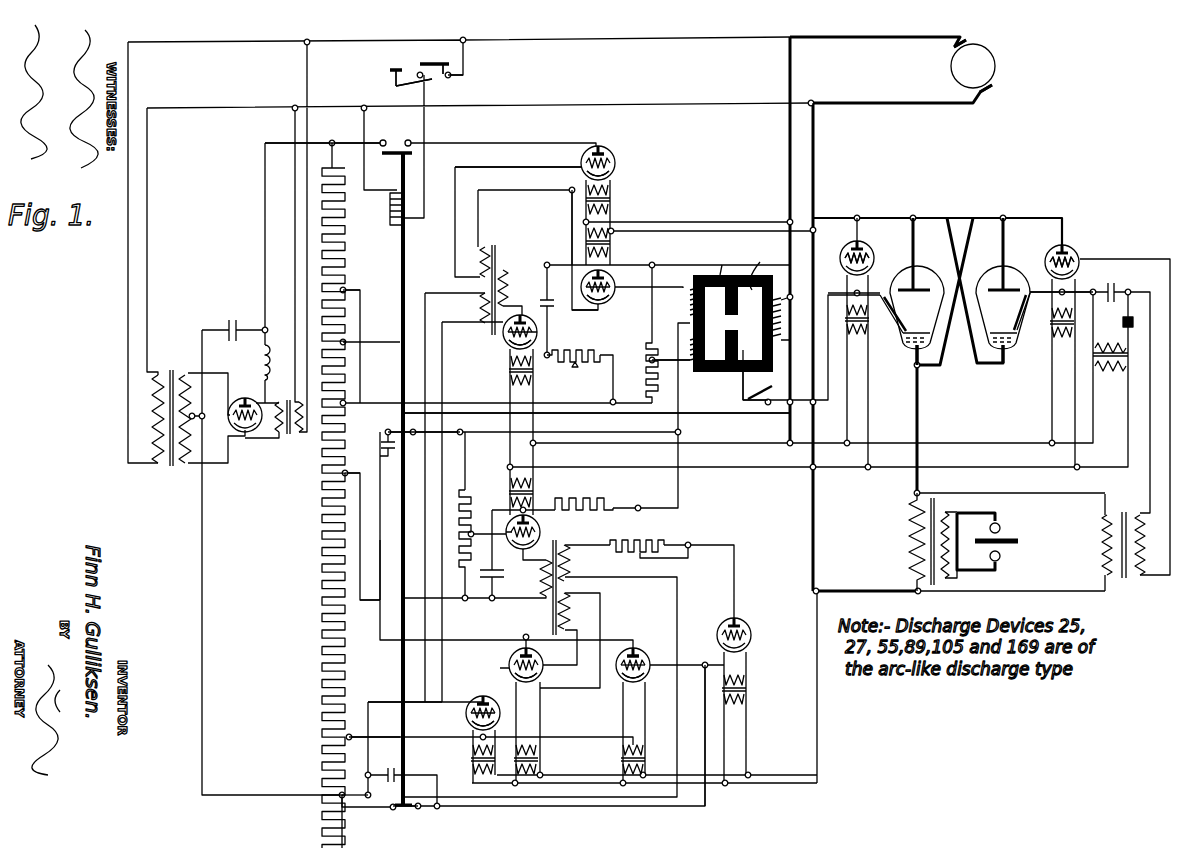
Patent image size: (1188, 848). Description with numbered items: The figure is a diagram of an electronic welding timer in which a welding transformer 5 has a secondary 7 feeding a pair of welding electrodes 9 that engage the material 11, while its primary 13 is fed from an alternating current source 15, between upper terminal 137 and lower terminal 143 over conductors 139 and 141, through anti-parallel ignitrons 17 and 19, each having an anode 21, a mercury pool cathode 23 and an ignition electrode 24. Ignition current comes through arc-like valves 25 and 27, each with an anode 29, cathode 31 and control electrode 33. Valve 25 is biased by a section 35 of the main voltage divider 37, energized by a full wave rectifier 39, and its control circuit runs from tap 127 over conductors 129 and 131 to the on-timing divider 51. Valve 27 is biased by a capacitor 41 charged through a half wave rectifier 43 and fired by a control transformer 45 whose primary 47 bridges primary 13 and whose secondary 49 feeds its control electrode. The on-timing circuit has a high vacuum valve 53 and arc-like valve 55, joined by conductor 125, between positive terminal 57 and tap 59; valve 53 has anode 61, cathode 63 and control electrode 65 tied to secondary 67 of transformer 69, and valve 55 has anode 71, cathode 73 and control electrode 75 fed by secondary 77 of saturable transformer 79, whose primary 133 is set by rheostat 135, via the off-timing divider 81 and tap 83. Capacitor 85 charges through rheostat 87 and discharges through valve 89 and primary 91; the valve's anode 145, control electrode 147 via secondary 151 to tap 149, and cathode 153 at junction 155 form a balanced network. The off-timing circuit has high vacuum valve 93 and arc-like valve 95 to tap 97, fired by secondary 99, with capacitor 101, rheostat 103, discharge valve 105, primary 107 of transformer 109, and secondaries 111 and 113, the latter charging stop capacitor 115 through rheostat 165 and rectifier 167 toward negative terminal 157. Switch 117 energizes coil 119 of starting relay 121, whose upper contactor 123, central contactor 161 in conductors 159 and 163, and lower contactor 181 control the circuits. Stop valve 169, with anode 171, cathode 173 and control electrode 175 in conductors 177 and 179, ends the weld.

The welding transformer 5 is at (953, 589).
The secondary 7 is at (946, 516).
The welding electrodes 9 is at (1002, 556).
The material 11 is at (982, 539).
The primary 13 is at (906, 542).
The source of alternating current 15 is at (933, 82).
The ignitron 17 is at (908, 283).
The ignitron 19 is at (996, 282).
The anode 21 is at (990, 289).
The mercury pool cathode 23 is at (1006, 352).
The ignition electrode 24 is at (1013, 340).
The auxiliary electric discharge valve 25 is at (850, 246).
The auxiliary electric discharge valve 27 is at (1071, 248).
The anode 29 is at (1058, 244).
The cathode 31 is at (1076, 290).
The control electrode 33 is at (1046, 264).
The section 35 is at (366, 342).
The voltage divider 37 is at (317, 609).
The full wave rectifier 39 is at (246, 369).
The capacitor 41 is at (1117, 288).
The half wave rectifier 43 is at (1123, 322).
The control transformer 45 is at (1137, 499).
The primary 47 is at (1100, 555).
The secondary 49 is at (1140, 578).
The auxiliary voltage divider 51 is at (647, 350).
The auxiliary valve 53 is at (616, 162).
The auxiliary valve 55 is at (614, 287).
The positive terminal 57 is at (335, 137).
The intermediate tap 59 is at (386, 432).
The anode 61 is at (512, 656).
The cathode 63 is at (543, 676).
The control electrode 65 is at (510, 667).
The secondary 67 is at (484, 248).
The transformer 69 is at (495, 262).
The anode 71 is at (476, 714).
The cathode 73 is at (470, 722).
The control electrode 75 is at (466, 714).
The secondary winding 77 is at (690, 292).
The impulse transformer 79 is at (733, 323).
The auxiliary voltage divider 81 is at (470, 513).
The intermediate tap 83 is at (346, 474).
The capacitor 85 is at (541, 301).
The rheostat 87 is at (584, 348).
The auxiliary valve 89 is at (506, 346).
The primary 91 is at (508, 277).
The high vacuum valve 93 is at (543, 664).
The arc-like valve 95 is at (480, 701).
The intermediate tap 97 is at (346, 737).
The secondary section 99 is at (480, 308).
The capacitor 101 is at (494, 572).
The rheostat 103 is at (585, 505).
The auxiliary valve 105 is at (541, 530).
The primary 107 is at (540, 582).
The transformer 109 is at (560, 548).
The secondary section 111 is at (570, 611).
The secondary section 113 is at (571, 562).
The stop capacitor 115 is at (390, 768).
The circuit controller 117 is at (488, 90).
The exciting coil 119 is at (390, 206).
The starting relay 121 is at (387, 180).
The upper contactor 123 is at (392, 137).
The conductor 125 is at (572, 215).
The intermediate tap 127 is at (345, 289).
The conductor 129 is at (730, 413).
The conductor 131 is at (732, 261).
The primary 133 is at (765, 269).
The rheostat 135 is at (766, 387).
The upper terminal 137 is at (968, 44).
The conductor 139 is at (791, 70).
The conductor 141 is at (815, 146).
The lower terminal 143 is at (973, 100).
The anode 145 is at (545, 531).
The control electrode 147 is at (506, 340).
The intermediate tap 149 is at (649, 362).
The secondary section 151 is at (742, 371).
The cathode 153 is at (532, 492).
The junction point 155 is at (575, 367).
The negative terminal 157 is at (338, 795).
The conductor 159 is at (374, 605).
The central movable contactor 161 is at (388, 452).
The conductor 163 is at (401, 548).
The rheostat 165 is at (660, 535).
The rectifier 167 is at (747, 628).
The stop valve 169 is at (645, 660).
The anode 171 is at (636, 650).
The cathode 173 is at (648, 680).
The control electrode 175 is at (620, 683).
The conductor 177 is at (382, 735).
The conductor 179 is at (701, 663).
The lower contactor 181 is at (393, 807).